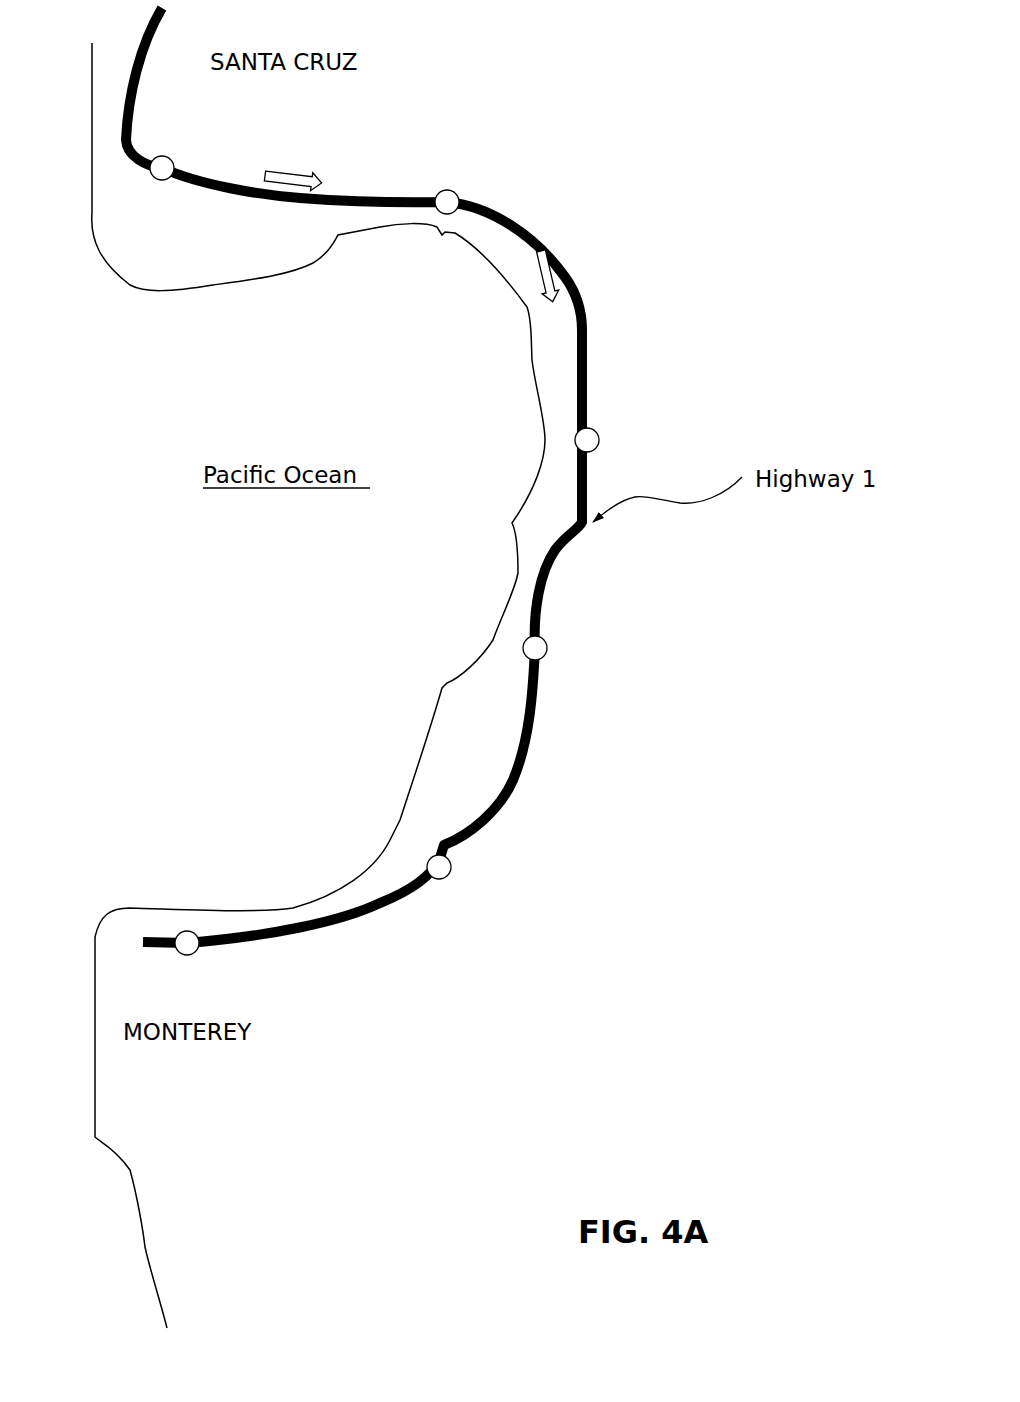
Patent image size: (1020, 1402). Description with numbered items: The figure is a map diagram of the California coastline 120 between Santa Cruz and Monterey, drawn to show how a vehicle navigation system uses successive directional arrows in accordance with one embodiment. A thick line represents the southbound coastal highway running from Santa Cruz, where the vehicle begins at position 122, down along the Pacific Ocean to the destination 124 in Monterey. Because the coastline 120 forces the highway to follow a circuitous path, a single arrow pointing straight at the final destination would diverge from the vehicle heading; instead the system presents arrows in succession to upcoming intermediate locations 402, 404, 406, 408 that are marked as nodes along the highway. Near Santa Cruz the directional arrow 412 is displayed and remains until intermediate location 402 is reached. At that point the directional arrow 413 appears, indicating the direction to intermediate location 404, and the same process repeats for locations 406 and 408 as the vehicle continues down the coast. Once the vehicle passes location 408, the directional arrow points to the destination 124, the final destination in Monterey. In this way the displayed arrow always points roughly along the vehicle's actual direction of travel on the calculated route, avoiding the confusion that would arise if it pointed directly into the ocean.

The California coastline 120 is at (150, 1267).
The vehicle position 122 is at (172, 155).
The destination 124 is at (197, 955).
The intermediate location 402 is at (462, 192).
The intermediate location 404 is at (598, 433).
The intermediate location 406 is at (548, 642).
The intermediate location 408 is at (452, 858).
The directional arrow 412 is at (285, 167).
The directional arrow 413 is at (549, 270).